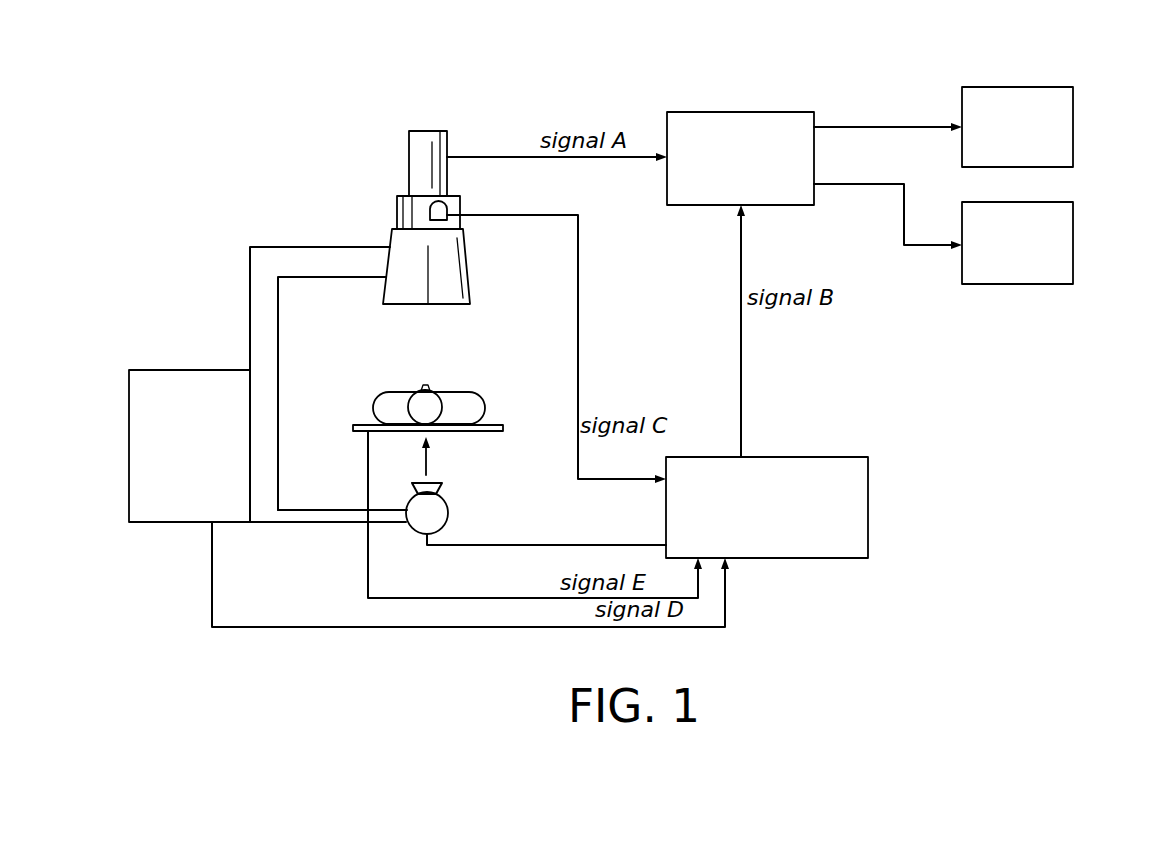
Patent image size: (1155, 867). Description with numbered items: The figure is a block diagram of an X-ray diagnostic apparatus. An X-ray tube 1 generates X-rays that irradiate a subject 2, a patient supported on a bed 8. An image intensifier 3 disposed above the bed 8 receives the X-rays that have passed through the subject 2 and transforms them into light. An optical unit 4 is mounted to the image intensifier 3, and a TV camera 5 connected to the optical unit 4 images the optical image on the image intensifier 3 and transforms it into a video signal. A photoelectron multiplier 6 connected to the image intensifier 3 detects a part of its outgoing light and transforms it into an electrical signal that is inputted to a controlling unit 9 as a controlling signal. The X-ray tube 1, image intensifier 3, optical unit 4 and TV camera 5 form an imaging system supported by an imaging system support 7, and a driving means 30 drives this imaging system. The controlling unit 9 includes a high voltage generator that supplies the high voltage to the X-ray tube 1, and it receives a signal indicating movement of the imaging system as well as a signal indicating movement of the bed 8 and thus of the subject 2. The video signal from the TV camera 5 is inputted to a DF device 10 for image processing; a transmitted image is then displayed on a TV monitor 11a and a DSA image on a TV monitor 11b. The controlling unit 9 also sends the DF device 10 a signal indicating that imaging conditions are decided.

The X-ray tube 1 is at (448, 513).
The subject 2 is at (468, 395).
The image intensifier 3 is at (466, 270).
The optical unit 4 is at (397, 213).
The TV camera 5 is at (418, 130).
The photoelectron multiplier 6 is at (451, 205).
The imaging system support 7 is at (287, 223).
The bed 8 is at (501, 426).
The controlling unit 9 is at (868, 478).
The DF device 10 is at (774, 112).
The TV monitor 11a is at (1075, 92).
The TV monitor 11b is at (1075, 220).
The driving means 30 is at (160, 370).